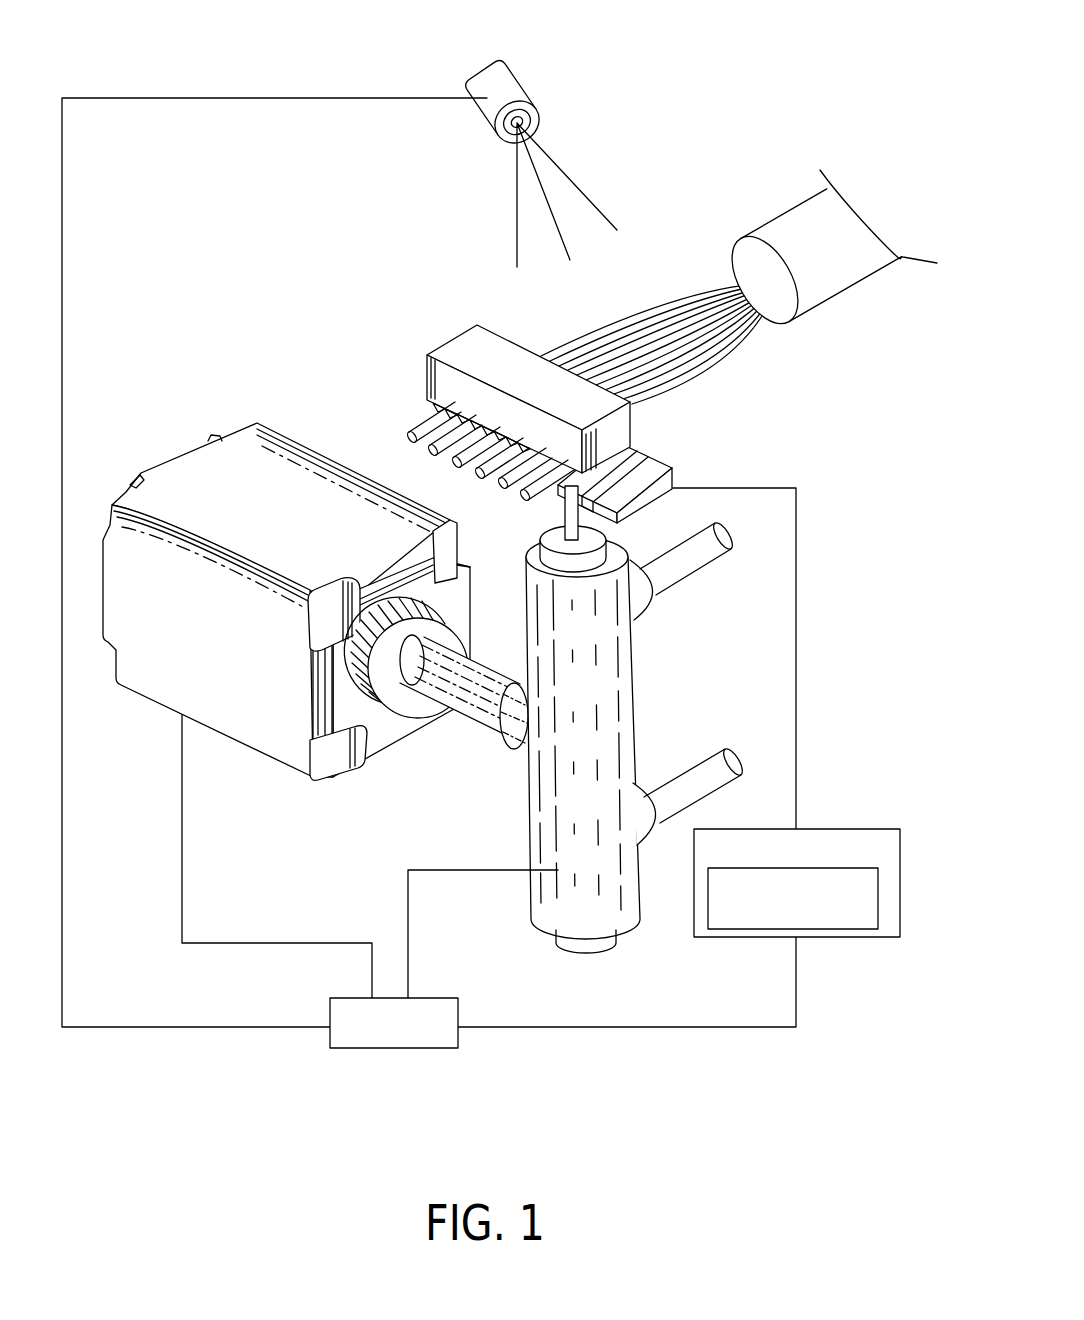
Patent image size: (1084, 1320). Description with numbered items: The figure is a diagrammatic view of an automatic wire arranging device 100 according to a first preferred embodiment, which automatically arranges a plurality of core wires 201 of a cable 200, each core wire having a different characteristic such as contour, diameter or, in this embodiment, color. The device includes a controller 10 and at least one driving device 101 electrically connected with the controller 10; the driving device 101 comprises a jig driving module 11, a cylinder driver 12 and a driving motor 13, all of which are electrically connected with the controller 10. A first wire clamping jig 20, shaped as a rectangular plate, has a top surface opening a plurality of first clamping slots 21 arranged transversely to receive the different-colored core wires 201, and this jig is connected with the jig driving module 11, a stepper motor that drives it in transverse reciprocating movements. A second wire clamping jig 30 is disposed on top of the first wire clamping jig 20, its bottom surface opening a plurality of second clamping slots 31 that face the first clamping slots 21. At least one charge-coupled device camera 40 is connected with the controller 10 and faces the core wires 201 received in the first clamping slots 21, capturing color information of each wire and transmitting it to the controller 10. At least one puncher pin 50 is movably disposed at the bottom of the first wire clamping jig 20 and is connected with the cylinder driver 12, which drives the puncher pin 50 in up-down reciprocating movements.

The controller 10 is at (395, 1048).
The jig driving module 11 is at (817, 928).
The cylinder driver 12 is at (599, 673).
The driving motor 13 is at (258, 712).
The first wire clamping jig 20 is at (659, 469).
The first clamping slots 21 is at (660, 453).
The second wire clamping jig 30 is at (496, 384).
The second clamping slots 31 is at (428, 390).
The charge-coupled device camera 40 is at (498, 80).
The puncher pin 50 is at (563, 515).
The automatic wire arranging device 100 is at (636, 180).
The driving device 101 is at (797, 877).
The cable 200 is at (773, 230).
The core wires 201 is at (737, 368).